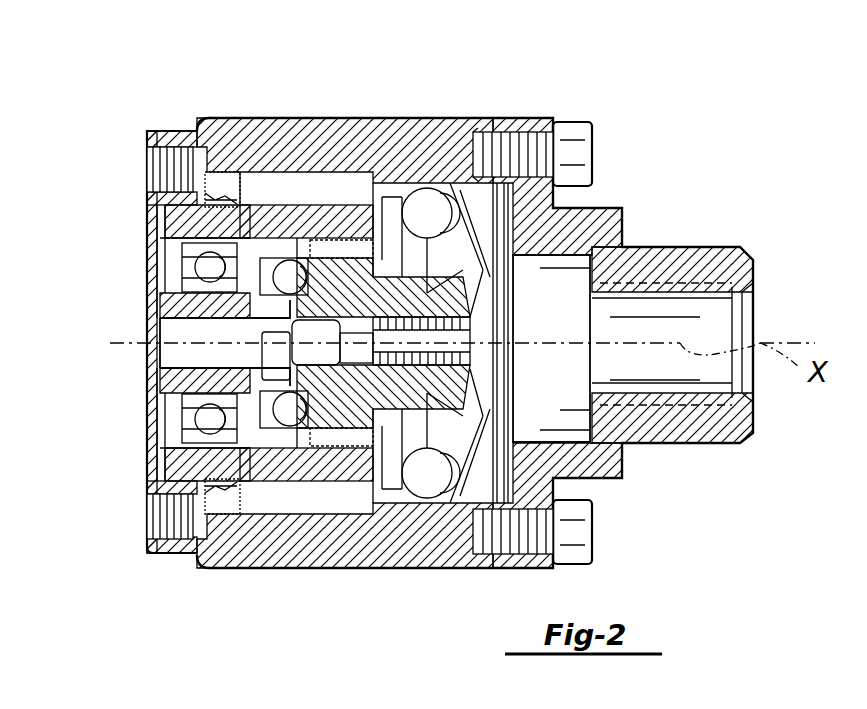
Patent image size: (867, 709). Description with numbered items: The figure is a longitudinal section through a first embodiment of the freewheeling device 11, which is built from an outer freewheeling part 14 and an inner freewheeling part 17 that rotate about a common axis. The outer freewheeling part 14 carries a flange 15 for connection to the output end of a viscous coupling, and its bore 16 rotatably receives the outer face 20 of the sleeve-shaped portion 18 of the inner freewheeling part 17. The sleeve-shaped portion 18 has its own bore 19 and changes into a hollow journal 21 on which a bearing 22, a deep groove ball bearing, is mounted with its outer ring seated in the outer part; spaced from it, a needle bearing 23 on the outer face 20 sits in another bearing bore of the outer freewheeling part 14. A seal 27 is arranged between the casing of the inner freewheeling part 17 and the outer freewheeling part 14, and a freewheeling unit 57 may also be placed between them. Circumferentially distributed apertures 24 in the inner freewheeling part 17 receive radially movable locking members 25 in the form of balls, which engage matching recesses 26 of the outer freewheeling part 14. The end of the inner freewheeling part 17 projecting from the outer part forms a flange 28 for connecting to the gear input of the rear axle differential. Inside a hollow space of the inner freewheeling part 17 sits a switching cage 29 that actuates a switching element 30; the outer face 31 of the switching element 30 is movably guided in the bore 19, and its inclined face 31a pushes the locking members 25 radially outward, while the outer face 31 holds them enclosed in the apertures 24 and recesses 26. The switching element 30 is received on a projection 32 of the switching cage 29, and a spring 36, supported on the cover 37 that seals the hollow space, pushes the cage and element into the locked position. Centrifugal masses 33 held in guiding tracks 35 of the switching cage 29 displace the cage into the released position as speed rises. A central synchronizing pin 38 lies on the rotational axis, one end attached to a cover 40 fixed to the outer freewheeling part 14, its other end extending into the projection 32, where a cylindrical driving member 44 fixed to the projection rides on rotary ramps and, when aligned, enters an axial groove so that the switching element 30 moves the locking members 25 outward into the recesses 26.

The freewheeling device 11 is at (450, 105).
The outer freewheeling part 14 is at (180, 128).
The flange 15 is at (148, 130).
The bore 16 is at (190, 460).
The inner freewheeling part 17 is at (415, 175).
The sleeve-shaped portion 18 is at (352, 200).
The bore 19 is at (390, 505).
The outer face 20 is at (248, 200).
The hollow journal 21 is at (190, 295).
The bearing 22 is at (160, 222).
The needle bearing 23 is at (370, 200).
The apertures 24 is at (323, 245).
The locking members 25 is at (283, 255).
The recesses 26 is at (258, 487).
The seal 27 is at (222, 172).
The flange 28 is at (497, 128).
The switching cage 29 is at (555, 200).
The switching element 30 is at (350, 470).
The outer face 31 is at (327, 470).
The inclined face 31a is at (195, 398).
The projection 32 is at (330, 372).
The centrifugal masses 33 is at (490, 178).
The guiding tracks 35 is at (463, 275).
The spring 36 is at (437, 327).
The cover 37 is at (505, 285).
The synchronizing pin 38 is at (195, 322).
The cover 40 is at (160, 268).
The driving member 44 is at (262, 357).
The freewheeling unit 57 is at (297, 500).